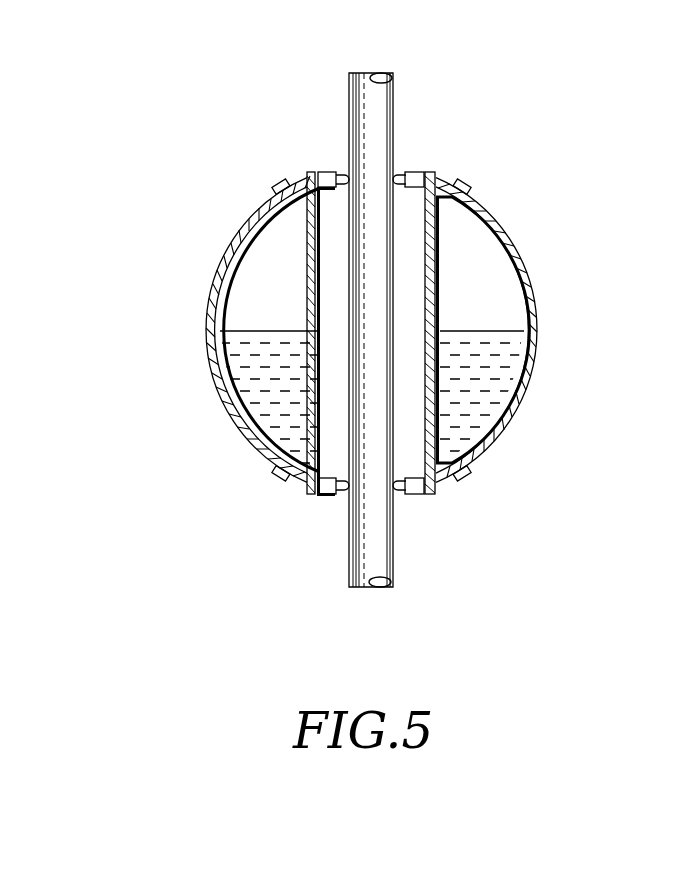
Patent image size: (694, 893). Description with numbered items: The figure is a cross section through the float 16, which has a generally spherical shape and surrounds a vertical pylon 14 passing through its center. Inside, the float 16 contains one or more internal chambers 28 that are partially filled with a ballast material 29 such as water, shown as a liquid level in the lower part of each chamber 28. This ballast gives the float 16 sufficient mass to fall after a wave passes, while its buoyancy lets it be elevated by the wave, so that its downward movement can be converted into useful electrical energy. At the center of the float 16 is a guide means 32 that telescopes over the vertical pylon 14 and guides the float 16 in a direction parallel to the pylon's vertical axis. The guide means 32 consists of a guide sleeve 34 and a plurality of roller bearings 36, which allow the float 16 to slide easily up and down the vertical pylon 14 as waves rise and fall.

The vertical pylon 14 is at (396, 118).
The float 16 is at (212, 295).
The internal chamber 28 is at (487, 273).
The ballast material 29 is at (490, 392).
The guide means 32 is at (343, 157).
The guide sleeve 34 is at (302, 178).
The roller bearings 36 is at (328, 170).